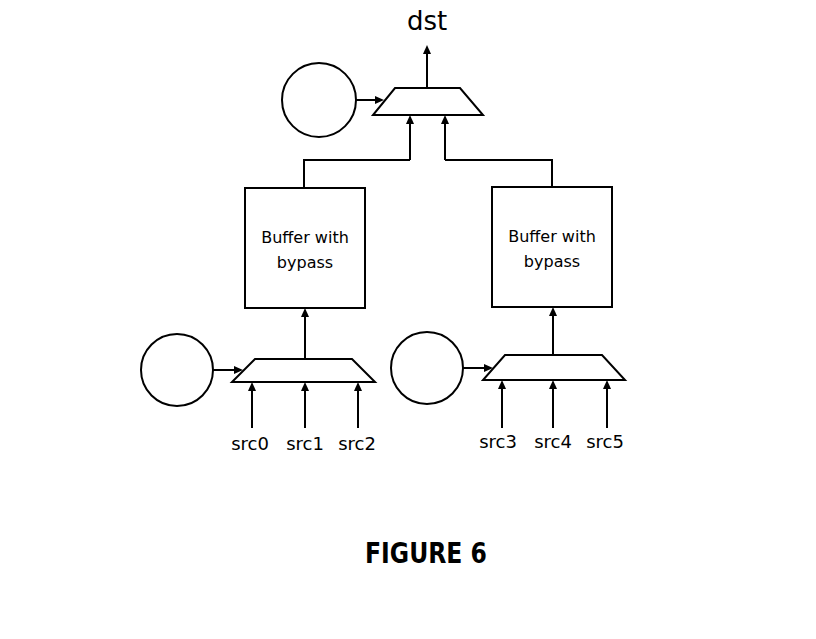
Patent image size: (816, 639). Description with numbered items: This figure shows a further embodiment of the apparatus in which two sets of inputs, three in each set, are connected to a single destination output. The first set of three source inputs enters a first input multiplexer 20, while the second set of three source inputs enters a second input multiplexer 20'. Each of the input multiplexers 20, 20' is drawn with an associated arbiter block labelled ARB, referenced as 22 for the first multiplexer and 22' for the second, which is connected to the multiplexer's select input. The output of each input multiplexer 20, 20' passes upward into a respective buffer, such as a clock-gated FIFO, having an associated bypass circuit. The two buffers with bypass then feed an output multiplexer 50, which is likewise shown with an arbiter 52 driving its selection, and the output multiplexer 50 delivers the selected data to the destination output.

The output multiplexer 50 is at (474, 101).
The output arbiter 52 is at (292, 78).
The input multiplexer 20 is at (263, 327).
The first input arbiter 22 is at (141, 393).
The input multiplexer 20' is at (596, 343).
The second input arbiter 22' is at (442, 419).